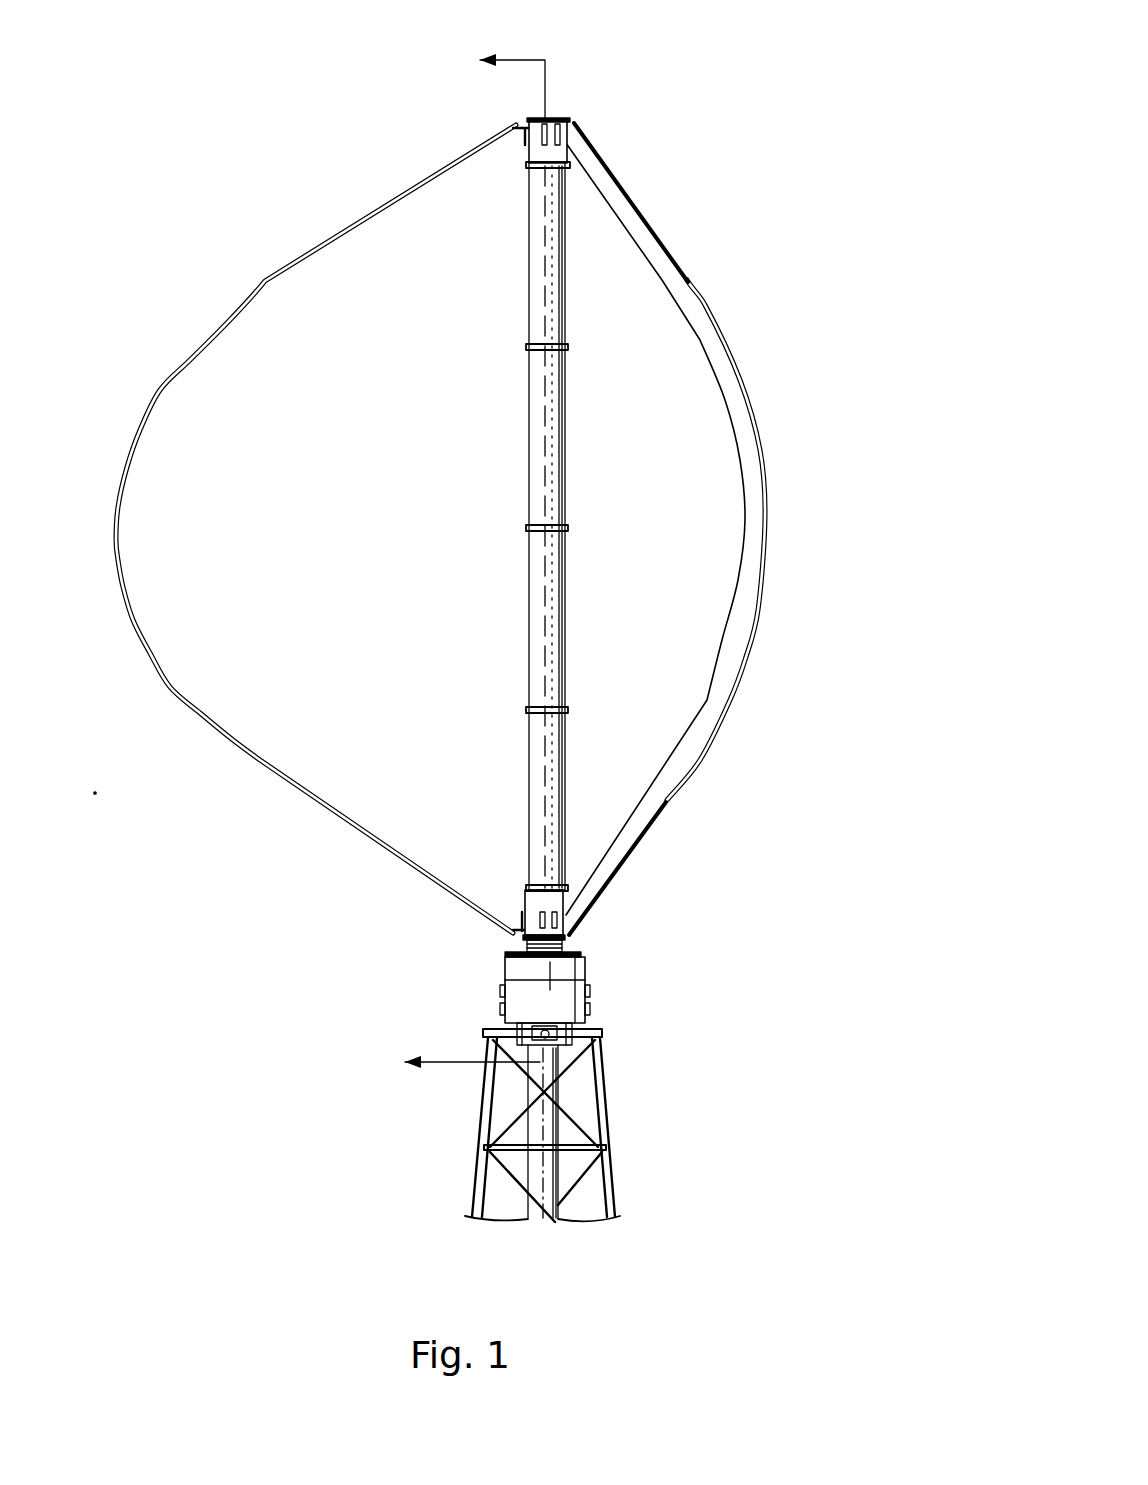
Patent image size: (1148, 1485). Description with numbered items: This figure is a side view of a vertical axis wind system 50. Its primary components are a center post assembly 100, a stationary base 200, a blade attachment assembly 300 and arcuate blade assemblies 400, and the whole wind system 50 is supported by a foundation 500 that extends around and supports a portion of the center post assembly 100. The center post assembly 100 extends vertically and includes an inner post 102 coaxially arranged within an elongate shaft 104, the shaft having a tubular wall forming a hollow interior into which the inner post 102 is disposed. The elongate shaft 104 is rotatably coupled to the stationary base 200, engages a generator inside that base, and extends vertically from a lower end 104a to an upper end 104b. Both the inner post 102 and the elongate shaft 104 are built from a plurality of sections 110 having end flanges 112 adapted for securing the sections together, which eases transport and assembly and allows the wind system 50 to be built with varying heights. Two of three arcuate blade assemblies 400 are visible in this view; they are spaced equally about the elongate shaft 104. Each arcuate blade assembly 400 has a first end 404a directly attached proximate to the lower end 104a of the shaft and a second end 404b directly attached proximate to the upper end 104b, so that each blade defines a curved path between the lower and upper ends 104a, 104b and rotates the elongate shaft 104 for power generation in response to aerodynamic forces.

The vertical axis wind system 50 is at (722, 127).
The center post assembly 100 is at (502, 452).
The inner post 102 is at (560, 1203).
The elongate shaft 104 is at (522, 668).
The lower end 104a is at (522, 890).
The upper end 104b is at (528, 183).
The sections 110 is at (528, 228).
The end flanges 112 is at (570, 165).
The stationary base 200 is at (615, 1022).
The blade attachment assembly 300 is at (583, 99).
The arcuate blade assembly 400 is at (245, 272).
The first end 404a is at (583, 926).
The second end 404b is at (500, 126).
The foundation 500 is at (483, 1125).